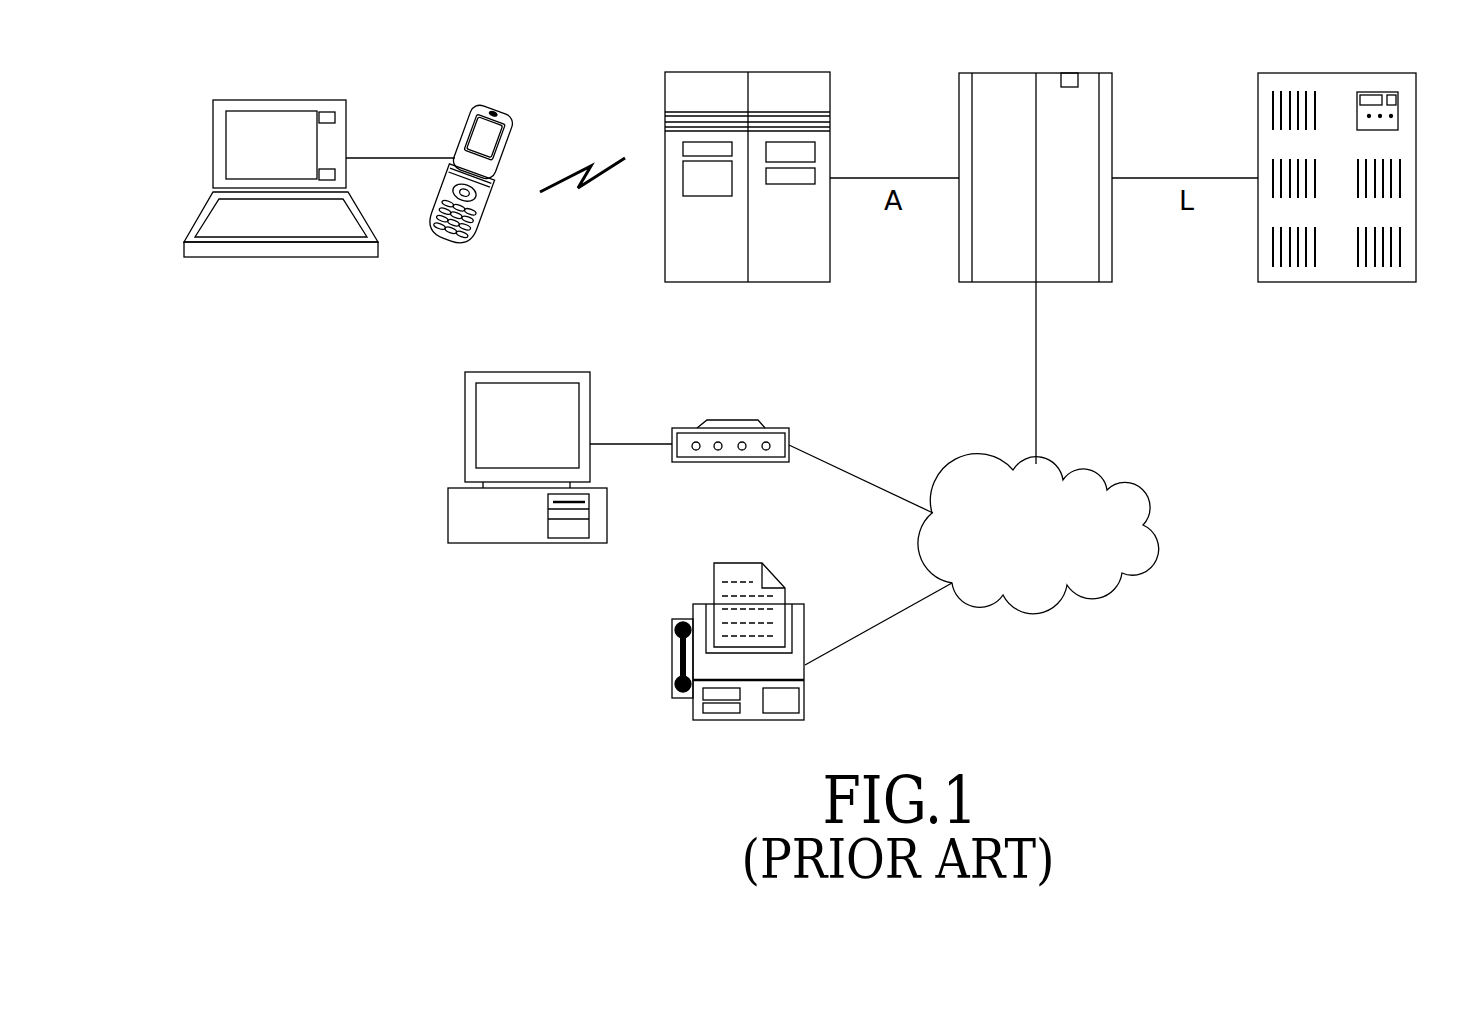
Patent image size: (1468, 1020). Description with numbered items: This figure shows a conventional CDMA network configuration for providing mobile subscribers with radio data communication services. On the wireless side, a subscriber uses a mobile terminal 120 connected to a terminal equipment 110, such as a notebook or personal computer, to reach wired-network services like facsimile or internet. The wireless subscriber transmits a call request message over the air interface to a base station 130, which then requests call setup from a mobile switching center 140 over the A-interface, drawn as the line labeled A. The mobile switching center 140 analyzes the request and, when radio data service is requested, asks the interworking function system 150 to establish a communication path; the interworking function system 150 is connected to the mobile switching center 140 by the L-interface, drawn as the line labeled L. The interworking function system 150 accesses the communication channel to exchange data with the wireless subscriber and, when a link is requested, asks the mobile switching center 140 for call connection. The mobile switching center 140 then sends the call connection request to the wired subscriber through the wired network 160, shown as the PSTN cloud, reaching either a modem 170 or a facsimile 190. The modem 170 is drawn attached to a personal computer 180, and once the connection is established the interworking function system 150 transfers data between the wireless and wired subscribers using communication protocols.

The terminal equipment 110 is at (294, 99).
The mobile terminal 120 is at (492, 108).
The base station 130 is at (767, 71).
The mobile switching center 140 is at (1052, 72).
The interworking function system 150 is at (1353, 72).
The wired network 160 is at (1107, 487).
The modem 170 is at (732, 420).
The personal computer 180 is at (529, 372).
The facsimile 190 is at (742, 563).